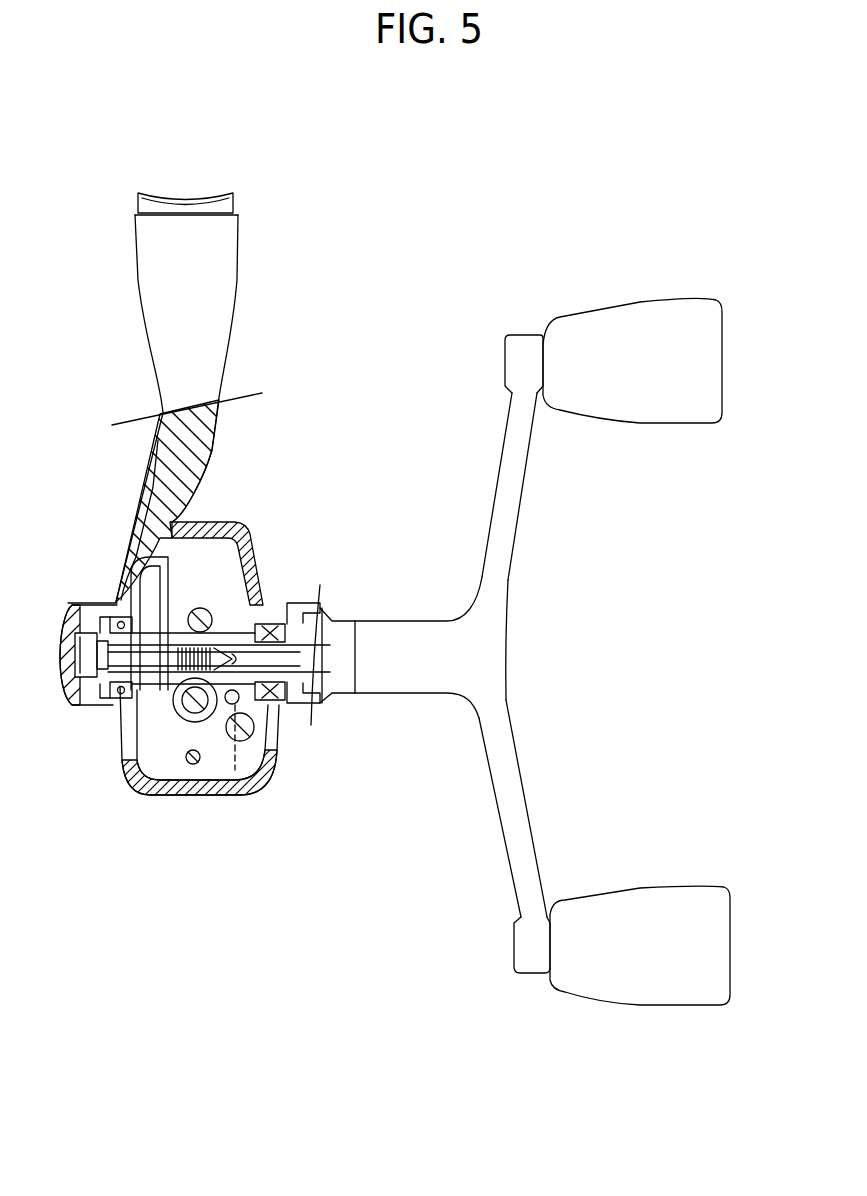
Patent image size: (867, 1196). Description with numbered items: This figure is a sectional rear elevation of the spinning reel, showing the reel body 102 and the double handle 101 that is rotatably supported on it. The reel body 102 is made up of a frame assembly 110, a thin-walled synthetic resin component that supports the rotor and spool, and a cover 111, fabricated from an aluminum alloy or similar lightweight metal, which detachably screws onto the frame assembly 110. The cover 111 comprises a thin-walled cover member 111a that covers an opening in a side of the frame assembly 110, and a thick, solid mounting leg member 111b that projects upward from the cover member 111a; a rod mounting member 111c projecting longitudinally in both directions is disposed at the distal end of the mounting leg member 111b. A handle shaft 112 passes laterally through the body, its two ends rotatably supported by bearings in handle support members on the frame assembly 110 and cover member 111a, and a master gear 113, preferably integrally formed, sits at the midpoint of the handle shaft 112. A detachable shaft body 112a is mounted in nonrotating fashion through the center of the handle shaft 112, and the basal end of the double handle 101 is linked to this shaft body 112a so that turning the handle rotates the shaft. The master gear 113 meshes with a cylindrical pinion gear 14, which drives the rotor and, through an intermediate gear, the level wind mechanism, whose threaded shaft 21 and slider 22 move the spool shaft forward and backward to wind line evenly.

The double handle 101 is at (498, 590).
The reel body 102 is at (263, 530).
The frame assembly 110 is at (270, 775).
The cover 111 is at (148, 363).
The cover member 111a is at (112, 597).
The mounting leg member 111b is at (156, 440).
The rod mounting member 111c is at (233, 190).
The handle shaft 112 is at (222, 618).
The shaft body 112a is at (95, 668).
The master gear 113 is at (147, 585).
The pinion gear 14 is at (150, 747).
The threaded shaft 21 is at (236, 780).
The slider 22 is at (225, 766).